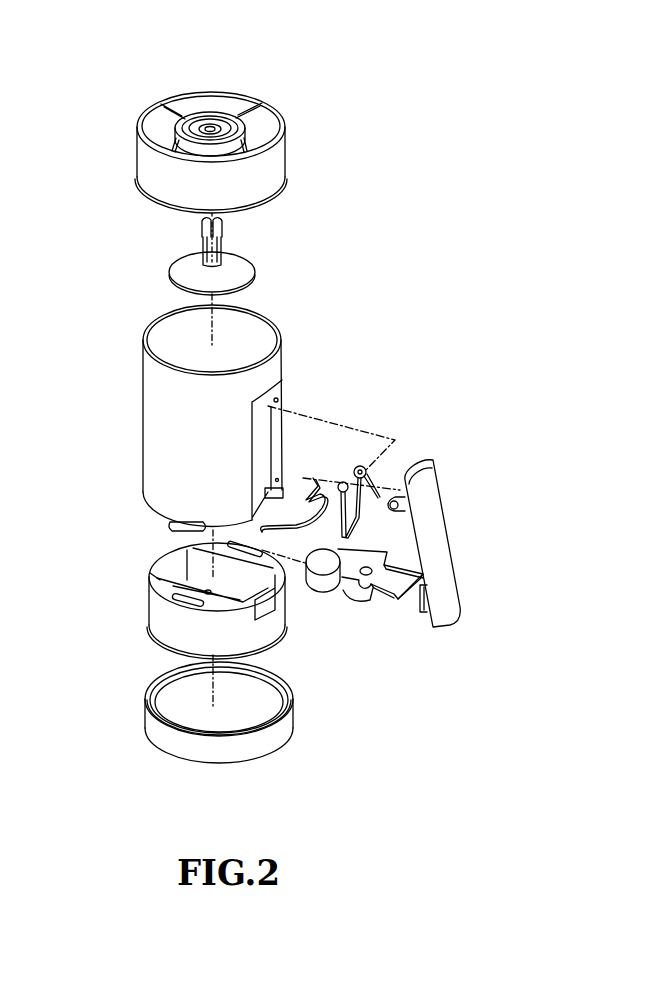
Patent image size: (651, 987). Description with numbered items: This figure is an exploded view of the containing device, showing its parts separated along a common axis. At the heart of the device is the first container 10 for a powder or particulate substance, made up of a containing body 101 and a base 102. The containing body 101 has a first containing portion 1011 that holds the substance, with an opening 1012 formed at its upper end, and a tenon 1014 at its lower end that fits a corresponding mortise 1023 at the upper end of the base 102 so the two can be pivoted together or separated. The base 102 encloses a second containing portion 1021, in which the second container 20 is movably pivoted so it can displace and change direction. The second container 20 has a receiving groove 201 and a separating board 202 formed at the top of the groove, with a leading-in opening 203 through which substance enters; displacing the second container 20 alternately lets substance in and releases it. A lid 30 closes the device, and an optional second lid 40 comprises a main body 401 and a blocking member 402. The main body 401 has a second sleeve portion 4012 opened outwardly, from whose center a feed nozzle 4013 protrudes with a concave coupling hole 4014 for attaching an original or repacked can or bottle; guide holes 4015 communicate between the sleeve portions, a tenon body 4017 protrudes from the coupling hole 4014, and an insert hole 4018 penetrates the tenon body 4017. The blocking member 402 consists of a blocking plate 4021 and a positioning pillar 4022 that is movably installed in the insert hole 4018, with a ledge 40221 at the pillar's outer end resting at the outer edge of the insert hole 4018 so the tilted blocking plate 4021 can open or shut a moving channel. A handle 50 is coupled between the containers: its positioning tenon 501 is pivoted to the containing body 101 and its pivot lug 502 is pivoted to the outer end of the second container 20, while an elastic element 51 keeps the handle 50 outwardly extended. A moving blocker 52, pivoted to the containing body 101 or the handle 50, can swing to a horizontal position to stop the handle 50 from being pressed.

The first container 10 is at (62, 592).
The containing body 101 is at (158, 467).
The first containing portion 1011 is at (222, 353).
The opening 1012 is at (240, 313).
The tenon 1014 is at (186, 527).
The base 102 is at (152, 607).
The second containing portion 1021 is at (200, 567).
The mortise 1023 is at (153, 575).
The second container 20 is at (359, 599).
The receiving groove 201 is at (326, 563).
The separating board 202 is at (372, 584).
The leading-in opening 203 is at (348, 664).
The lid 30 is at (150, 717).
The second lid 40 is at (372, 170).
The main body 401 is at (284, 155).
The second sleeve portion 4012 is at (237, 103).
The feed nozzle 4013 is at (174, 137).
The coupling hole 4014 is at (183, 122).
The guide holes 4015 is at (247, 151).
The tenon body 4017 is at (194, 124).
The insert hole 4018 is at (208, 126).
The blocking member 402 is at (333, 218).
The blocking plate 4021 is at (243, 267).
The positioning pillar 4022 is at (221, 247).
The ledge 40221 is at (202, 226).
The handle 50 is at (443, 530).
The positioning tenon 501 is at (398, 505).
The pivot lug 502 is at (427, 600).
The elastic element 51 is at (362, 467).
The moving blocker 52 is at (318, 480).